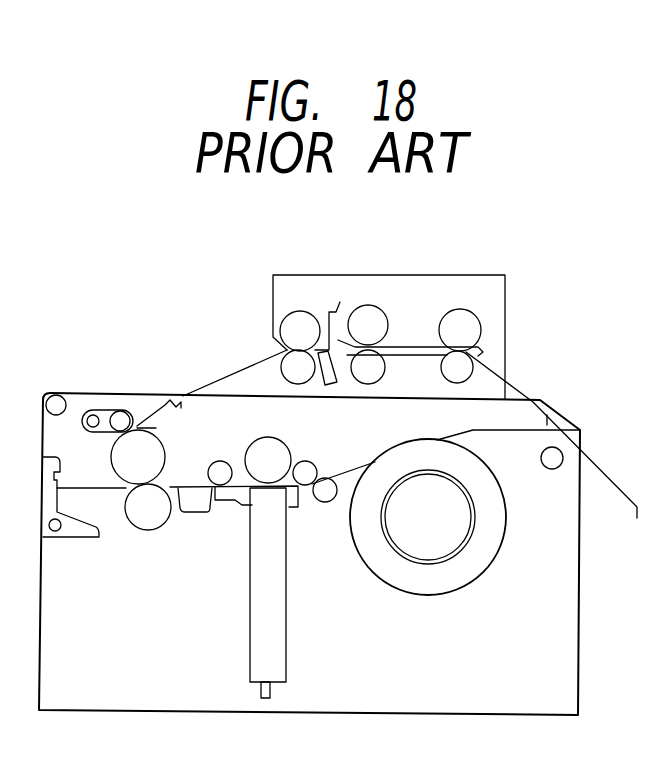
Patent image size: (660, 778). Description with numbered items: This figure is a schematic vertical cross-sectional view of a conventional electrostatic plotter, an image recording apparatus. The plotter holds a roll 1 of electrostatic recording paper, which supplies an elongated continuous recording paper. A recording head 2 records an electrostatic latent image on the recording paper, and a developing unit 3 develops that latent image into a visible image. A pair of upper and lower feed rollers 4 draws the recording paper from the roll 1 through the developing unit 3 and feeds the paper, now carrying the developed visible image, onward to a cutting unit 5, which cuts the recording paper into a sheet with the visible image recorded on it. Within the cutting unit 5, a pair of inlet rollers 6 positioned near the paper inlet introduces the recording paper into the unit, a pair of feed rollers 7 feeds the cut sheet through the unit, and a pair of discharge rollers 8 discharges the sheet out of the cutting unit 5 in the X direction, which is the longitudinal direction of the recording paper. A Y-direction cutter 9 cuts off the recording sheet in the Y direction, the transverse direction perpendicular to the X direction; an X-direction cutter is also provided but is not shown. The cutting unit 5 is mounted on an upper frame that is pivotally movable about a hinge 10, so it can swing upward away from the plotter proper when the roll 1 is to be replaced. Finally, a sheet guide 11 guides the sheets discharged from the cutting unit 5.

The roll of electrostatic recording paper 1 is at (443, 585).
The recording head 2 is at (286, 635).
The developing unit 3 is at (195, 505).
The pair of upper and lower feed rollers 4 is at (152, 448).
The cutting unit 5 is at (421, 280).
The pair of inlet rollers 6 is at (297, 320).
The pair of feed rollers 7 is at (366, 312).
The pair of discharge rollers 8 is at (460, 320).
The Y-direction cutter 9 is at (340, 302).
The hinge 10 is at (550, 452).
The sheet guide 11 is at (602, 478).